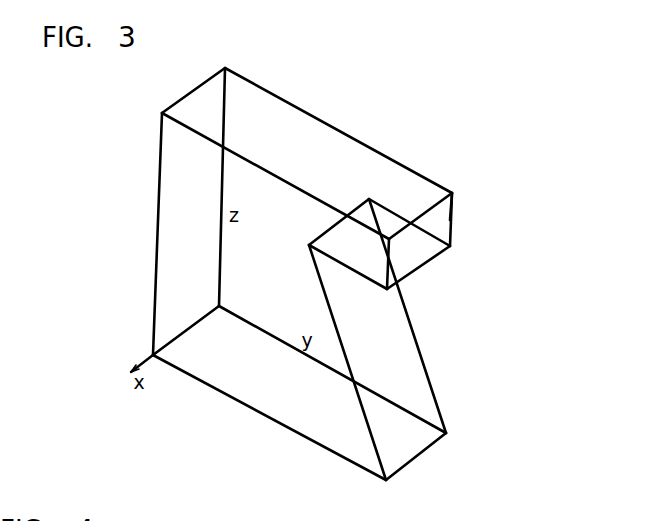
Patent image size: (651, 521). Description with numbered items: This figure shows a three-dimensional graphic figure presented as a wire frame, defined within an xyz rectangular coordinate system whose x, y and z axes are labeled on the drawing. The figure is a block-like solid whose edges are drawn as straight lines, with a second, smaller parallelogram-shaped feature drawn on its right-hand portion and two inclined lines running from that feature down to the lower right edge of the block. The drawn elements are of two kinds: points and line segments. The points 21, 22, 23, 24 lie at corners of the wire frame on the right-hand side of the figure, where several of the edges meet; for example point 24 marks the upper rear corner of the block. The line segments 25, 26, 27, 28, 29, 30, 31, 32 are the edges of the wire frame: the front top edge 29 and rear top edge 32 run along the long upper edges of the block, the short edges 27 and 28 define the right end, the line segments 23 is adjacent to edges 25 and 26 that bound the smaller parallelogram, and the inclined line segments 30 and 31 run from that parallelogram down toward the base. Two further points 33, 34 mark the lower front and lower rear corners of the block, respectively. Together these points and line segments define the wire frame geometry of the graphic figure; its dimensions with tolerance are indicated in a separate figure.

The point 21 is at (392, 243).
The point 22 is at (362, 273).
The point 23 is at (452, 247).
The point 24 is at (453, 193).
The line segment 25 is at (393, 249).
The line segment 26 is at (440, 254).
The line segment 27 is at (452, 213).
The line segment 28 is at (430, 212).
The line segment 29 is at (293, 185).
The line segment 30 is at (388, 291).
The line segment 31 is at (395, 213).
The line segment 32 is at (360, 141).
The point 33 is at (386, 482).
The point 34 is at (447, 434).